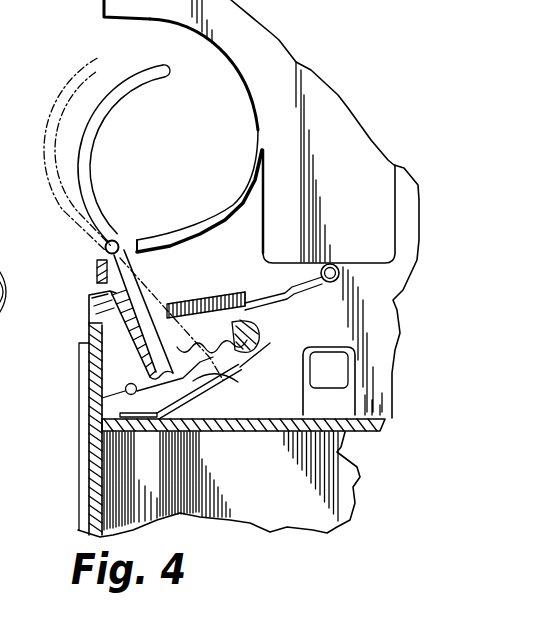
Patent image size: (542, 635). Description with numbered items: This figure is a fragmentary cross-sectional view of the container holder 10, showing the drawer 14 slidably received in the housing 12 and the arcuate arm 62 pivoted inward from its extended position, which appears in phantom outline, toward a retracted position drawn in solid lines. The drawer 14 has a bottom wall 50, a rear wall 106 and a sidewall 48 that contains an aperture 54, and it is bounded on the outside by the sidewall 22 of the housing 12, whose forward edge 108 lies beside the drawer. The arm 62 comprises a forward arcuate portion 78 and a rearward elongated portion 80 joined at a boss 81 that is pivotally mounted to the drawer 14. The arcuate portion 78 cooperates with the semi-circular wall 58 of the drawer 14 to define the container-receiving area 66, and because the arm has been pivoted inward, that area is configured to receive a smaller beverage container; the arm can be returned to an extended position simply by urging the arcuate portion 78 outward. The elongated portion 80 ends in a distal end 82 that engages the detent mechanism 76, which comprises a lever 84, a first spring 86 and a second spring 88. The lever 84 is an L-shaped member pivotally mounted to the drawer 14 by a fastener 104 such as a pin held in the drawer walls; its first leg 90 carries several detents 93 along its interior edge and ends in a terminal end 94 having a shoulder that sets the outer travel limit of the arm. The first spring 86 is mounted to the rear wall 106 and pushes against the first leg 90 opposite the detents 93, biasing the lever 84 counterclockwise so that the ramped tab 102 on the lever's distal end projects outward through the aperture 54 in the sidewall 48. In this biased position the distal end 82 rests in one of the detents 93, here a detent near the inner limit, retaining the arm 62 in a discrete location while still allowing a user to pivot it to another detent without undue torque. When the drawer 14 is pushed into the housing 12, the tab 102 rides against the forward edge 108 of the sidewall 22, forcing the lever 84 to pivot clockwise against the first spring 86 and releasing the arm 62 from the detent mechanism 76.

The container holder 10 is at (352, 56).
The housing 12 is at (88, 463).
The drawer 14 is at (238, 433).
The sidewall 22 is at (98, 385).
The sidewall 48 is at (97, 323).
The bottom wall 50 is at (383, 326).
The aperture 54 is at (97, 270).
The semi-circular wall 58 is at (258, 125).
The arcuate arm 62 is at (78, 143).
The container-receiving area 66 is at (176, 147).
The detent mechanism 76 is at (268, 348).
The forward arcuate portion 78 is at (118, 83).
The rearward elongated portion 80 is at (135, 297).
The boss 81 is at (118, 242).
The distal end 82 is at (193, 358).
The lever 84 is at (167, 340).
The first spring 86 is at (185, 398).
The second spring 88 is at (267, 290).
The first leg 90 is at (147, 430).
The detents 93 is at (232, 354).
The terminal end 94 is at (3, 268).
The tab 102 is at (90, 296).
The fastener 104 is at (100, 402).
The rear wall 106 is at (283, 433).
The forward edge 108 is at (90, 343).